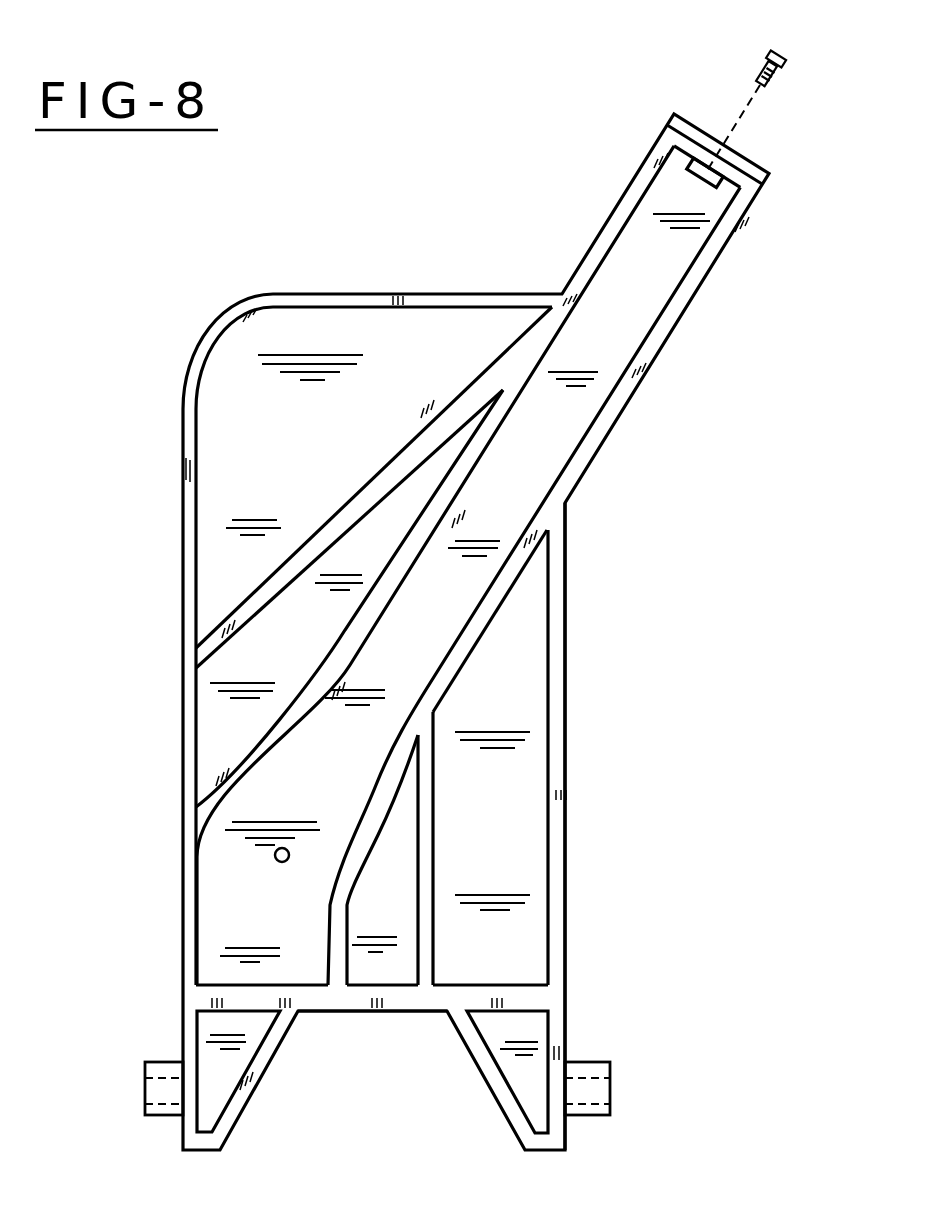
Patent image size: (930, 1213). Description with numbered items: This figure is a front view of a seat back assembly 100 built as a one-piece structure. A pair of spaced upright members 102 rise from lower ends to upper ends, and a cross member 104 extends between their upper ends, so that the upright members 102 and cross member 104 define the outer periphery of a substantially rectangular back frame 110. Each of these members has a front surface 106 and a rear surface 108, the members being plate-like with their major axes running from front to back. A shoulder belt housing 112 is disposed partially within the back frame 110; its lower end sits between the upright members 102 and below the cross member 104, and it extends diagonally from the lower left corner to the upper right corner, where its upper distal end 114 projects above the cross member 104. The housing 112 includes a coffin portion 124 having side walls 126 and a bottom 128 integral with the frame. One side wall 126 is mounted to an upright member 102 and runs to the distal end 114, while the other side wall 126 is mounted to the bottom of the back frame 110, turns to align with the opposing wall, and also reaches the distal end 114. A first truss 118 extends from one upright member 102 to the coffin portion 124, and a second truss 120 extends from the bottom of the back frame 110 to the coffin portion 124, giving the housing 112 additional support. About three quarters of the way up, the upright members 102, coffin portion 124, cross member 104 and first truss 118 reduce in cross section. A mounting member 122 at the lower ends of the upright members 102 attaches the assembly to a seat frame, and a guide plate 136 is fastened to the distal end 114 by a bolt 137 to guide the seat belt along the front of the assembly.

The seat back assembly 100 is at (641, 682).
The upright member 102 is at (177, 724).
The cross member 104 is at (448, 292).
The front surface 106 is at (343, 293).
The rear surface 108 is at (567, 712).
The back frame 110 is at (211, 326).
The shoulder belt housing 112 is at (646, 372).
The upper distal end 114 is at (748, 190).
The first truss 118 is at (318, 528).
The second truss 120 is at (436, 825).
The mounting member 122 is at (163, 1060).
The coffin portion 124 is at (560, 450).
The side wall 126 is at (548, 347).
The bottom 128 is at (353, 796).
The guide plate 136 is at (757, 155).
The bolt 137 is at (787, 62).